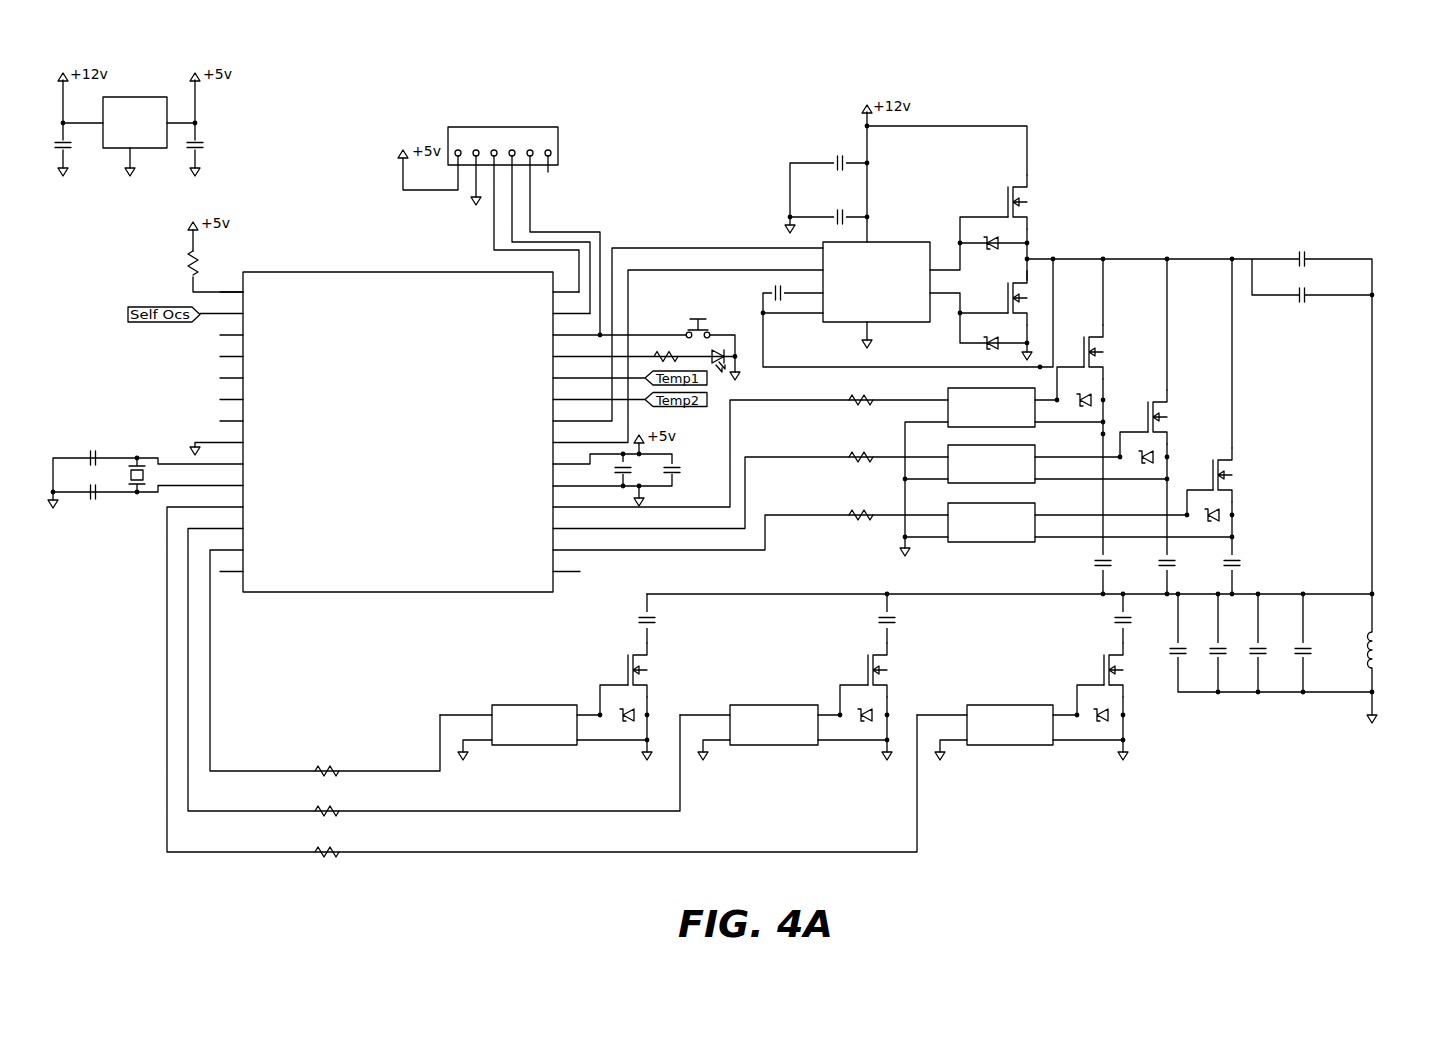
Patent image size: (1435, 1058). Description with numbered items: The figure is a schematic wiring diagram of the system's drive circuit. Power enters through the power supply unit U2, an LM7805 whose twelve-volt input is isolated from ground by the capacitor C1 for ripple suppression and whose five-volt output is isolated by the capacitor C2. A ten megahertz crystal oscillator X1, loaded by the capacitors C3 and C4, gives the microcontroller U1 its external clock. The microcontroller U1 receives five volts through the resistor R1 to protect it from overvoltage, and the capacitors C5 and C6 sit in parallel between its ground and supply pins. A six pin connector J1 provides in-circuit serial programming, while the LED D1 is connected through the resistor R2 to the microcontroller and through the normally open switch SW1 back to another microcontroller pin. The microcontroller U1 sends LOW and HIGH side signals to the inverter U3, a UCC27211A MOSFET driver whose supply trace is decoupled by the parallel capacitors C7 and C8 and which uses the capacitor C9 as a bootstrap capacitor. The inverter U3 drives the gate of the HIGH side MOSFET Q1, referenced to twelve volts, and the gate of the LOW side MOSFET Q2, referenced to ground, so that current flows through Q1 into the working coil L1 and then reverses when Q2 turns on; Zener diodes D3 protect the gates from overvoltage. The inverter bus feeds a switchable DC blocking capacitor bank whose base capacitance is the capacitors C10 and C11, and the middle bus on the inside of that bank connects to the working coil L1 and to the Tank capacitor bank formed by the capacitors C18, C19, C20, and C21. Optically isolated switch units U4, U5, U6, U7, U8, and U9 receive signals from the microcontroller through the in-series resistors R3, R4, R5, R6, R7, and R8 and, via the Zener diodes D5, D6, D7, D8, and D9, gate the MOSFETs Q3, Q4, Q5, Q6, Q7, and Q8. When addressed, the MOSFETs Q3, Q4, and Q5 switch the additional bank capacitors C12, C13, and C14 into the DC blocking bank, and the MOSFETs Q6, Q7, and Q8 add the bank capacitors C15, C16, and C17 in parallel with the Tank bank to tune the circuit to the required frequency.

The microcontroller U1 is at (405, 424).
The power supply unit U2 is at (136, 122).
The inverter U3 is at (877, 281).
The optically isolated switch unit U4 is at (990, 399).
The optically isolated switch unit U5 is at (990, 455).
The optically isolated switch unit U6 is at (990, 514).
The optically isolated switch unit U7 is at (534, 716).
The optically isolated switch unit U8 is at (774, 716).
The optically isolated switch unit U9 is at (1010, 716).
The 6 pin connector J1 is at (512, 128).
The crystal oscillator X1 is at (161, 467).
The normally open switch SW1 is at (702, 318).
The working coil L1 is at (1391, 654).
The resistor R1 is at (203, 267).
The resistor R2 is at (670, 349).
The in-series resistor R3 is at (867, 392).
The in-series resistor R4 is at (867, 449).
The in-series resistor R5 is at (867, 507).
The in-series resistor R6 is at (333, 762).
The in-series resistor R7 is at (333, 803).
The in-series resistor R8 is at (333, 844).
The capacitor C1 is at (80, 146).
The capacitor C2 is at (213, 146).
The capacitor C3 is at (103, 452).
The capacitor C4 is at (101, 494).
The capacitor C5 is at (608, 473).
The capacitor C6 is at (655, 474).
The capacitor C7 is at (833, 163).
The capacitor C8 is at (829, 206).
The bootstrap capacitor C9 is at (782, 285).
The capacitor C10 is at (1304, 252).
The capacitor C11 is at (1304, 289).
The bank capacitor C12 is at (1115, 563).
The bank capacitor C13 is at (1179, 563).
The bank capacitor C14 is at (1244, 563).
The bank capacitor C15 is at (659, 619).
The bank capacitor C16 is at (899, 619).
The bank capacitor C17 is at (1135, 619).
The capacitor C18 is at (1189, 652).
The capacitor C19 is at (1229, 652).
The capacitor C20 is at (1269, 652).
The capacitor C21 is at (1314, 652).
The HIGH side MOSFET Q1 is at (1011, 179).
The LOW side MOSFET Q2 is at (1011, 312).
The MOSFET Q3 is at (1092, 321).
The MOSFET Q4 is at (1156, 387).
The MOSFET Q5 is at (1220, 440).
The MOSFET Q6 is at (591, 662).
The MOSFET Q7 is at (831, 662).
The MOSFET Q8 is at (1066, 662).
The LED D1 is at (728, 344).
The Zener diode D3 is at (1024, 320).
The Zener diode D5 is at (1134, 455).
The Zener diode D6 is at (1200, 513).
The Zener diode D7 is at (616, 715).
The Zener diode D8 is at (854, 715).
The Zener diode D9 is at (1090, 715).